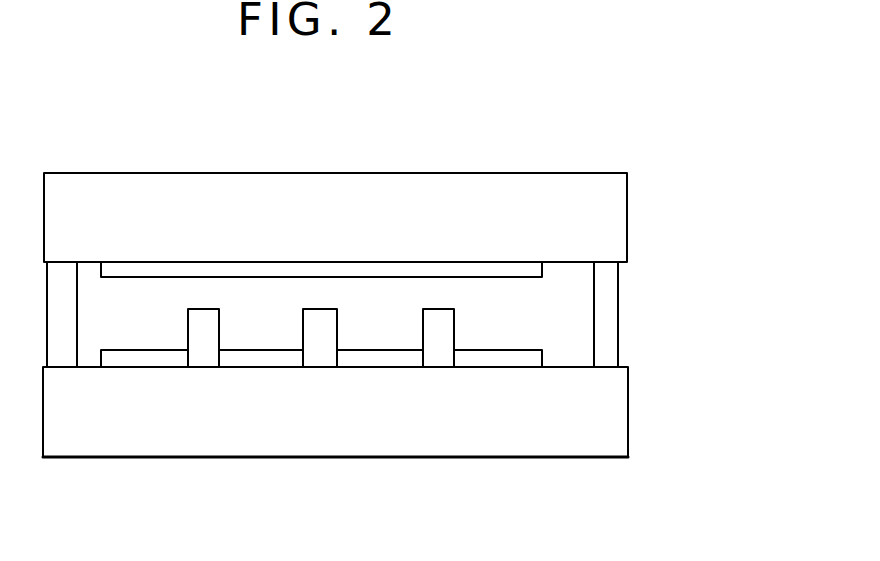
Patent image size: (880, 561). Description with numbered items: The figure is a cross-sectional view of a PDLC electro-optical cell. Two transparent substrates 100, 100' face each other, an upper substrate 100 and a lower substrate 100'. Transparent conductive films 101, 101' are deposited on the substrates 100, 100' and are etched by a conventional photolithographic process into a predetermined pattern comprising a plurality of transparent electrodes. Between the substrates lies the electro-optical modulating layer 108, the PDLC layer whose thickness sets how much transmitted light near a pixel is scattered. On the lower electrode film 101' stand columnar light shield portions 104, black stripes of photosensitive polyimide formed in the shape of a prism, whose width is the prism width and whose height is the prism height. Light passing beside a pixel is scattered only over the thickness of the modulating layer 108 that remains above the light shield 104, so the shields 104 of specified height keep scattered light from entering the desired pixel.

The transparent substrate 100 is at (335, 181).
The transparent conductive film 101 is at (338, 189).
The electro-optical modulating layer 108 is at (568, 320).
The transparent substrate 100' is at (380, 412).
The transparent conductive film 101' is at (317, 436).
The light shield 104 is at (320, 355).